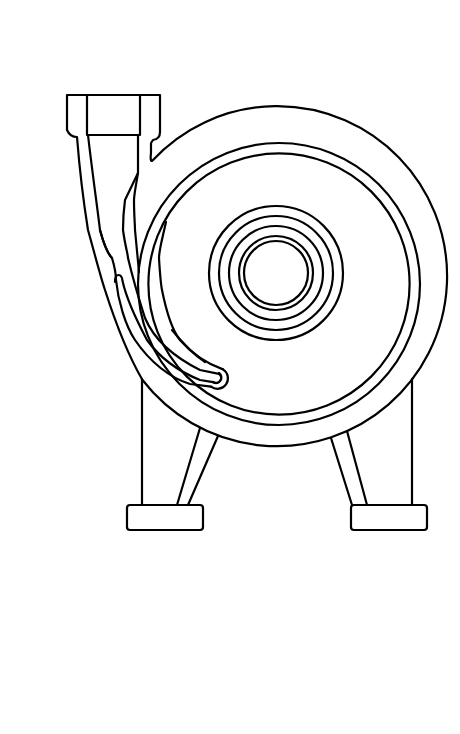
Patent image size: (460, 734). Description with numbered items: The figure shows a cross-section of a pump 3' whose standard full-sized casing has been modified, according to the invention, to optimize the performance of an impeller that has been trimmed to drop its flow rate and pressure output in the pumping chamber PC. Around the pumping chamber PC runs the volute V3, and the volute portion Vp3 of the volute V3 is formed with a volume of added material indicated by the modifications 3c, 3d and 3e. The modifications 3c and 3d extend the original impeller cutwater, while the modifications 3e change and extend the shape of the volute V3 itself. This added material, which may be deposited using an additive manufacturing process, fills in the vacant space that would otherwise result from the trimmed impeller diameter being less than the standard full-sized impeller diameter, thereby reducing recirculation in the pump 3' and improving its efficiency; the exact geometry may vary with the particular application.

The pump 3' is at (228, 357).
The pumping chamber PC is at (302, 167).
The volute V3 is at (145, 179).
The volute portion Vp3 is at (163, 333).
The modification extending impeller cutwater 3c is at (183, 340).
The modification extending impeller cutwater 3d is at (233, 378).
The modification to volute shape 3e is at (347, 392).